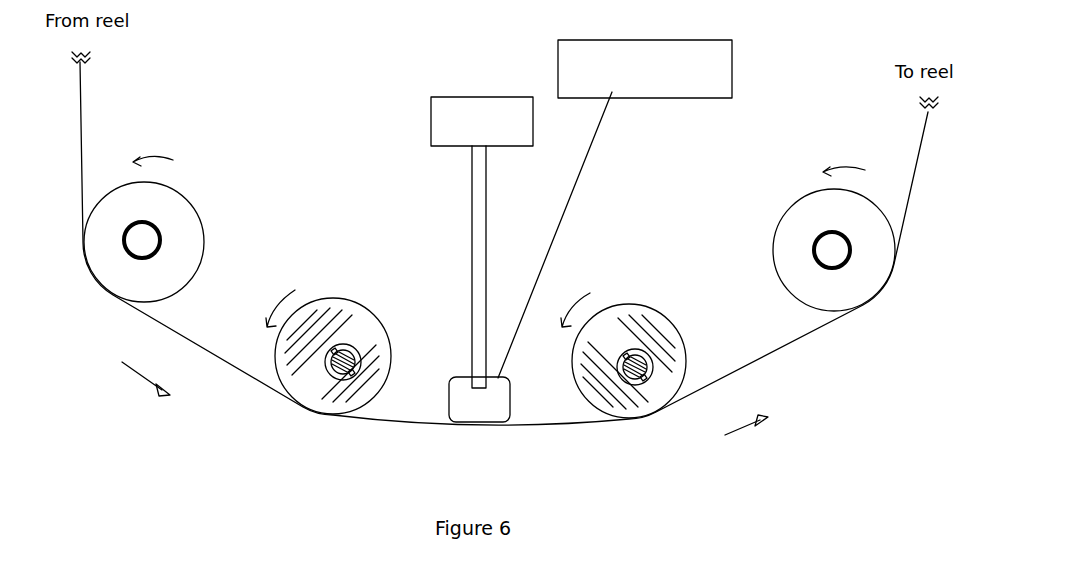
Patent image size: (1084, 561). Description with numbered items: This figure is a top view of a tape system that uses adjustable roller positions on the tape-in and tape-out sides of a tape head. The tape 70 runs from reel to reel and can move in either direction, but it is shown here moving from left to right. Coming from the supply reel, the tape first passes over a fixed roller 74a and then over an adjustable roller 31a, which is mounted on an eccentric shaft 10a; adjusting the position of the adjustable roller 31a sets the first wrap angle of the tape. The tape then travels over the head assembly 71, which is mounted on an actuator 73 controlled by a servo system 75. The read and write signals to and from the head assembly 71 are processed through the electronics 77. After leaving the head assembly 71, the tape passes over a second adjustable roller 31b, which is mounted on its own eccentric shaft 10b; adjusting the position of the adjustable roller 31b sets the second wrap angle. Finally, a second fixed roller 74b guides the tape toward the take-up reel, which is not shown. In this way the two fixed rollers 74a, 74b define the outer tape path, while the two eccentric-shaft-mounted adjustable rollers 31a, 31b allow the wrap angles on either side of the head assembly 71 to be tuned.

The tape 70 is at (380, 440).
The head assembly 71 is at (505, 390).
The actuator 73 is at (468, 203).
The servo system 75 is at (446, 102).
The electronics 77 is at (648, 50).
The fixed roller 74a is at (207, 212).
The fixed roller 74b is at (802, 193).
The adjustable roller 31a is at (382, 313).
The adjustable roller 31b is at (675, 320).
The eccentric shaft 10a is at (355, 338).
The eccentric shaft 10b is at (642, 345).